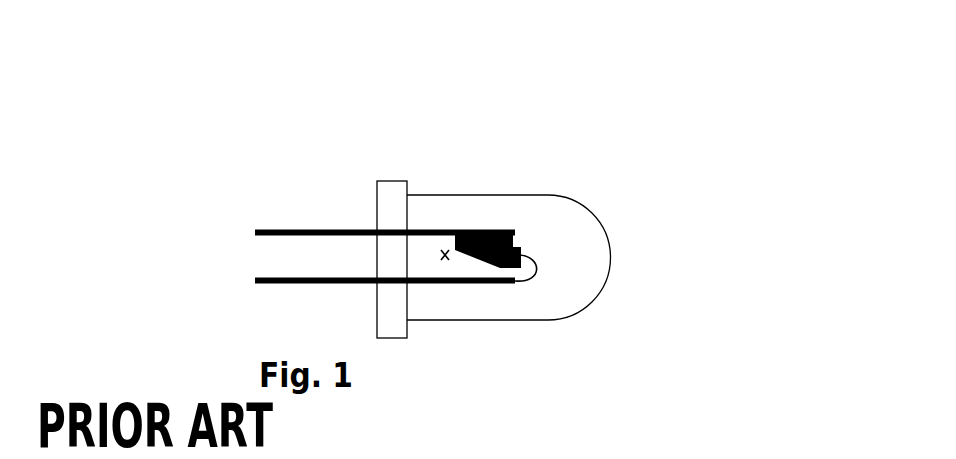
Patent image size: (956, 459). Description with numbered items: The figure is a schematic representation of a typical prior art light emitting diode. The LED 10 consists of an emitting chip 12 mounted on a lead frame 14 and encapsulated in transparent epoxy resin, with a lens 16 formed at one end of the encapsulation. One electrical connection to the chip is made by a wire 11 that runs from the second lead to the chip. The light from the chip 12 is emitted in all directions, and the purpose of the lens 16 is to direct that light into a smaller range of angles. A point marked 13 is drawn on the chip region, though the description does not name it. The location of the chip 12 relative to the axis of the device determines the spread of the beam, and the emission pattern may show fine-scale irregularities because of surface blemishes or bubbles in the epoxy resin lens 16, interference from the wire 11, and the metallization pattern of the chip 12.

The LED 10 is at (515, 200).
The wire 11 is at (536, 261).
The emitting chip 12 is at (523, 246).
The light emission point 13 is at (446, 266).
The lead frame 14 is at (473, 226).
The lens 16 is at (617, 272).